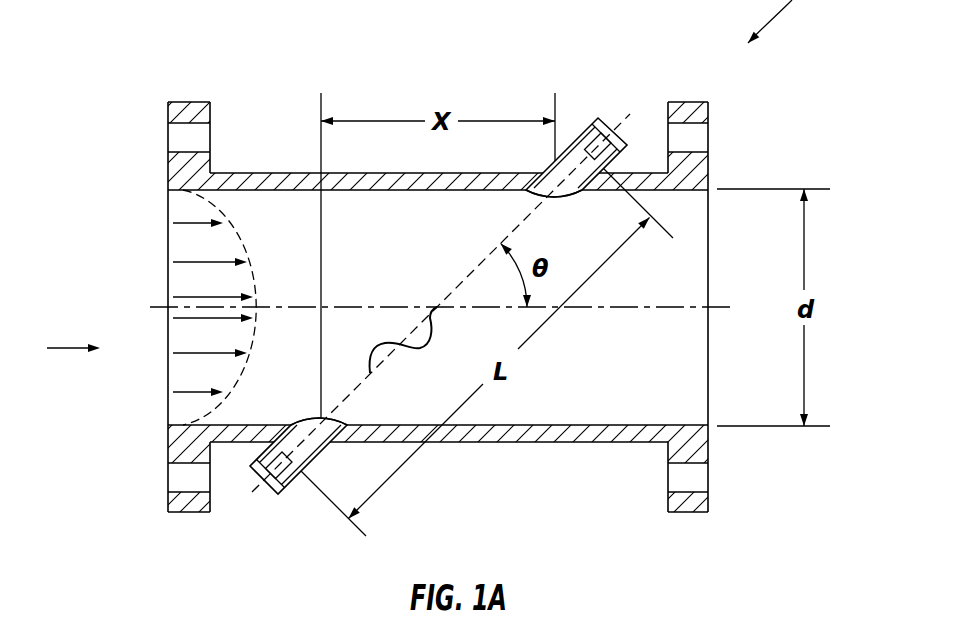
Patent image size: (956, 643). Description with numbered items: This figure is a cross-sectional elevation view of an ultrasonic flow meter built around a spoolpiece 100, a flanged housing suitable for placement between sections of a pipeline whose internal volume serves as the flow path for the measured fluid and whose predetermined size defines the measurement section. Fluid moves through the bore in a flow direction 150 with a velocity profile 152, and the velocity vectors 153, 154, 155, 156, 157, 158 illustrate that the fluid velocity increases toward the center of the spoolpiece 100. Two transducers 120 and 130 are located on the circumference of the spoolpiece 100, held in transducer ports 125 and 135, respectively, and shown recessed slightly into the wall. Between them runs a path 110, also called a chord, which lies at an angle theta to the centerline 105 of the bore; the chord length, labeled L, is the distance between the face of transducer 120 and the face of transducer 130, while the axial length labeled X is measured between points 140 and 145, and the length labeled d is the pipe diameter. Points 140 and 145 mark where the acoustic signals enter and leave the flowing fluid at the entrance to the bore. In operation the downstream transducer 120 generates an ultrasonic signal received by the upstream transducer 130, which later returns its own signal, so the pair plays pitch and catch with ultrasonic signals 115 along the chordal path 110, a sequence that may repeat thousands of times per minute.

The spoolpiece 100 is at (185, 102).
The centerline 105 is at (712, 309).
The path (chord) 110 is at (481, 265).
The ultrasonic signals 115 is at (410, 350).
The downstream transducer 120 is at (612, 120).
The transducer port 125 is at (581, 127).
The upstream transducer 130 is at (268, 496).
The transducer port 135 is at (304, 471).
The point 140 is at (555, 197).
The point 145 is at (321, 418).
The flow direction 150 is at (88, 349).
The velocity profile 152 is at (232, 228).
The velocity vector 153 is at (193, 222).
The velocity vector 154 is at (188, 262).
The velocity vector 155 is at (188, 297).
The velocity vector 156 is at (190, 318).
The velocity vector 157 is at (190, 353).
The velocity vector 158 is at (190, 392).